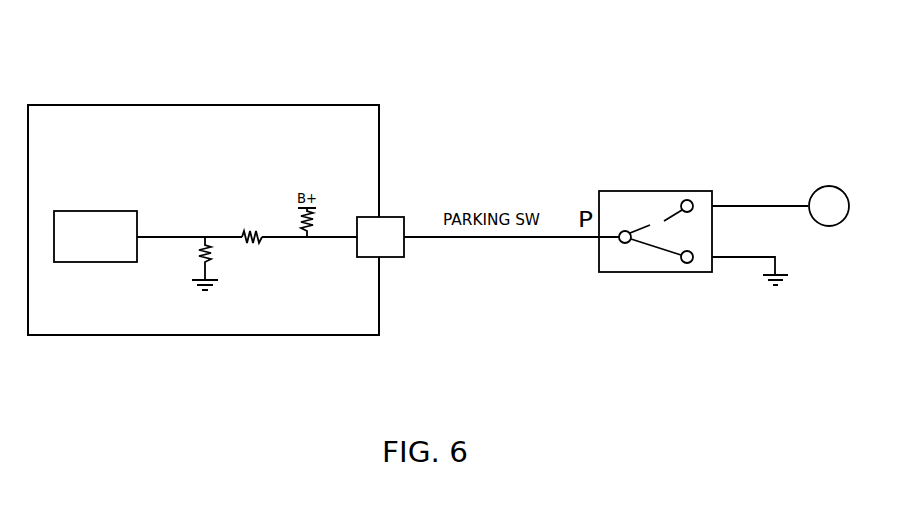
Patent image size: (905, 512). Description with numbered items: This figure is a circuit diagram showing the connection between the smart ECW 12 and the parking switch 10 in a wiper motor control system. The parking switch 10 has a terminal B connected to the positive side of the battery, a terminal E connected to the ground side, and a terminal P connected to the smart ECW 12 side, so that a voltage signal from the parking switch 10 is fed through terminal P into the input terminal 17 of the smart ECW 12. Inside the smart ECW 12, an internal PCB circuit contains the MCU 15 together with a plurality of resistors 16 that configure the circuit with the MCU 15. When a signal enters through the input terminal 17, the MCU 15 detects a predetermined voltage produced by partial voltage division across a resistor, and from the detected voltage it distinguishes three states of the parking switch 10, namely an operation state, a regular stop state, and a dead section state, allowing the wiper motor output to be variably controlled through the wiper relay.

The parking switch 10 is at (586, 191).
The smart ECW 12 is at (197, 118).
The MCU 15 is at (93, 262).
The resistors 16 is at (255, 240).
The input terminal 17 is at (397, 257).